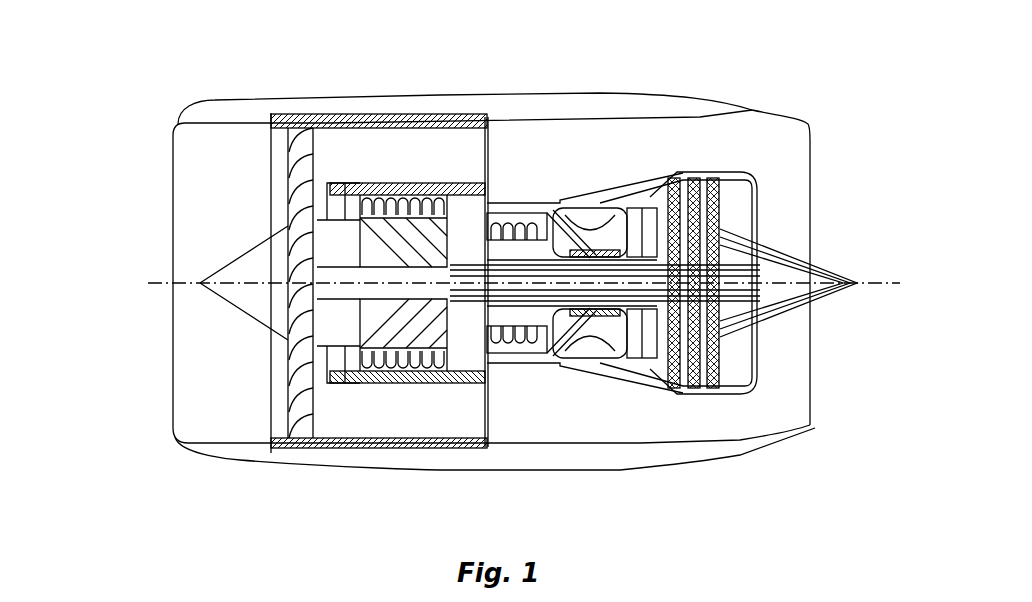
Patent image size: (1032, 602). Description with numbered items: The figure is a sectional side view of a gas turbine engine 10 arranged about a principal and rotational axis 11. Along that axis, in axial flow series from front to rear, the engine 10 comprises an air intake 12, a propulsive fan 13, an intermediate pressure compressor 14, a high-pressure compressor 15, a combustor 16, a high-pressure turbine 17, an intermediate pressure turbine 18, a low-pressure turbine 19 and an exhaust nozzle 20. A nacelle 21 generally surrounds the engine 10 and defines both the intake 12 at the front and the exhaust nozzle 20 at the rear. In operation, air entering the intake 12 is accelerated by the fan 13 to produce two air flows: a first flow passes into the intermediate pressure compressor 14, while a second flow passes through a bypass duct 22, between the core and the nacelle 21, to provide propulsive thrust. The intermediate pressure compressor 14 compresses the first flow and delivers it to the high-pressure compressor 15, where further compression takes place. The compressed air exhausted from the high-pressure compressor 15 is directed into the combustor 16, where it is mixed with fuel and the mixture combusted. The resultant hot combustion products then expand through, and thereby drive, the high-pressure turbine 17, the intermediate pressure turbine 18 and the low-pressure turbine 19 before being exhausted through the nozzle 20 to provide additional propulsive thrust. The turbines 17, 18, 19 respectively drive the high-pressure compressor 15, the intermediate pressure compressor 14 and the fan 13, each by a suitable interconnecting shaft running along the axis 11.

The gas turbine engine 10 is at (157, 163).
The principal and rotational axis 11 is at (165, 280).
The air intake 12 is at (228, 124).
The propulsive fan 13 is at (290, 402).
The intermediate pressure compressor 14 is at (420, 375).
The high-pressure compressor 15 is at (507, 220).
The combustor 16 is at (577, 347).
The high-pressure turbine 17 is at (617, 353).
The intermediate pressure turbine 18 is at (650, 213).
The low-pressure turbine 19 is at (660, 377).
The exhaust nozzle 20 is at (813, 427).
The nacelle 21 is at (623, 92).
The bypass duct 22 is at (463, 170).